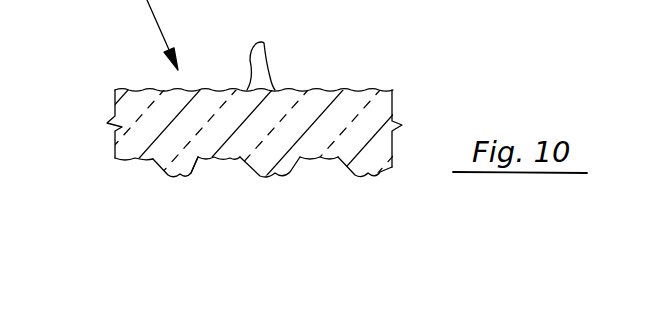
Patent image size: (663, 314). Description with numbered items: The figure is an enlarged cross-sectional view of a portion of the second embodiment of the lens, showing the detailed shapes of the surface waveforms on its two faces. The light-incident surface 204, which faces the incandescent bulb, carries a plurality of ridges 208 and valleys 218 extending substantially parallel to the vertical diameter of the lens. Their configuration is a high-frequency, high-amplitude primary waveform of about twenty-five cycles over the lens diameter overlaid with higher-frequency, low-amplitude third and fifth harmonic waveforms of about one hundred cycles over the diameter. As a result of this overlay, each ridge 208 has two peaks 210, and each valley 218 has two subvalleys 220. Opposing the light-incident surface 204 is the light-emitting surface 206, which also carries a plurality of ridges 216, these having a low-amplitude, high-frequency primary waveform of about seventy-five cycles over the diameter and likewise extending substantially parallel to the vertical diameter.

The light-incident surface 204 is at (334, 158).
The light-emitting surface 206 is at (350, 90).
The ridge 208 is at (204, 163).
The peak 210 is at (193, 178).
The ridge 216 is at (280, 54).
The valley 218 is at (323, 159).
The subvalley 220 is at (221, 159).